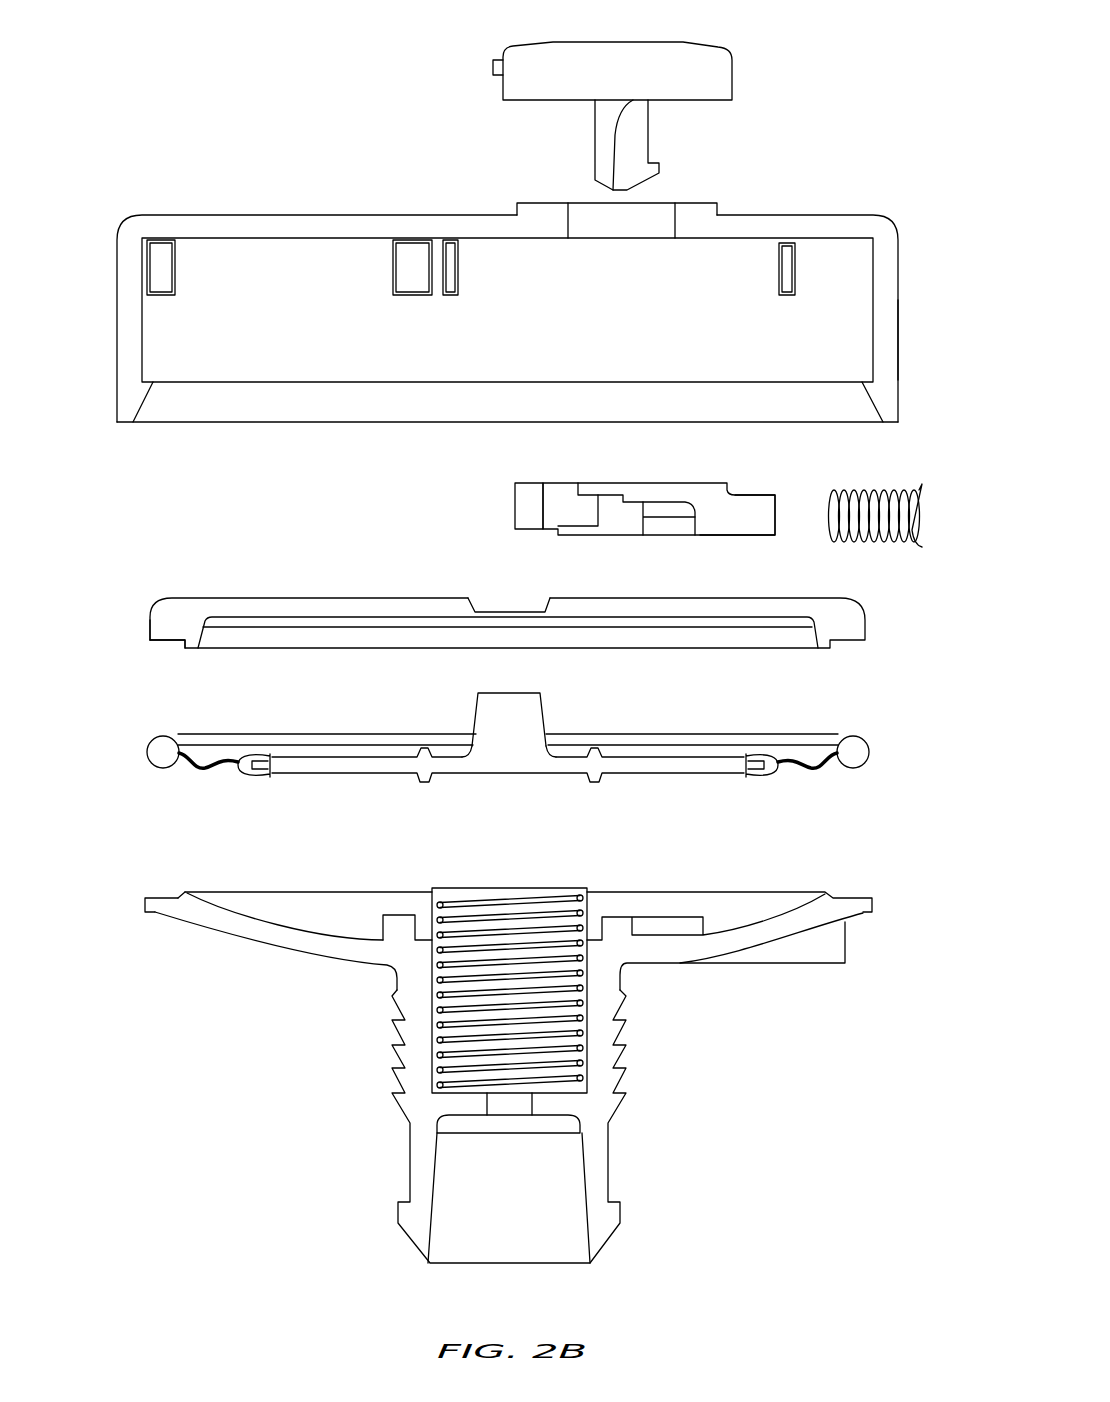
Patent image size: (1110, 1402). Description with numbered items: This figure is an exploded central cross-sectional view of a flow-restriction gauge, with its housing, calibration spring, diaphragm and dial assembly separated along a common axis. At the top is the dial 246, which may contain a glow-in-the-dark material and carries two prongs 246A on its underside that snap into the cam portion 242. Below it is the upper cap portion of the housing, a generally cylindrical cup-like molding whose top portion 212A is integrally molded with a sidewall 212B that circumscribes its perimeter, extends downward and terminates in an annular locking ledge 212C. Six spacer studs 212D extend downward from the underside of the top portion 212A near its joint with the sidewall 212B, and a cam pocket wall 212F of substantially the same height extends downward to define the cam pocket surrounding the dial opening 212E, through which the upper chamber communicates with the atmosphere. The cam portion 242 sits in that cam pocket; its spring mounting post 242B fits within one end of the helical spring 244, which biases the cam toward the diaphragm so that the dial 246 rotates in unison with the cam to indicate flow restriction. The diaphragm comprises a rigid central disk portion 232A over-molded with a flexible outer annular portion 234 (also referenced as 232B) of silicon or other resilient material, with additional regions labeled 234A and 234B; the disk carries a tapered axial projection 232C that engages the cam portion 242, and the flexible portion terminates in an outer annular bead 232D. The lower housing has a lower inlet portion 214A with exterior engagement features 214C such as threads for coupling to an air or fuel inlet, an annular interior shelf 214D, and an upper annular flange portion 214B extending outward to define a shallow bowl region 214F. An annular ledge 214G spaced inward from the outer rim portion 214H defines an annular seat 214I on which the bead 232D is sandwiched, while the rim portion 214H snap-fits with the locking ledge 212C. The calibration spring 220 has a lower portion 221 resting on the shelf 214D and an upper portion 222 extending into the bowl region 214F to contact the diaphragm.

The dial 246 is at (600, 42).
The prongs 246A is at (595, 140).
The top portion 212A is at (180, 213).
The sidewall 212B is at (900, 333).
The annular locking ledge 212C is at (140, 398).
The spacer studs 212D is at (405, 264).
The dial opening 212E is at (786, 248).
The cam pocket wall 212F is at (655, 220).
The cam portion 242 is at (514, 502).
The spring mounting post 242B is at (730, 522).
The helical spring 244 is at (863, 492).
The flexible outer annular portion 234 is at (855, 607).
The cover plate end 234A is at (165, 646).
The cover plate notch 234B is at (505, 607).
The central disk portion 232A is at (368, 763).
The flexible outer annular portion 232B is at (812, 774).
The tapered axial projection 232C is at (512, 712).
The outer annular bead 232D is at (163, 748).
The lower inlet portion 214A is at (410, 1157).
The upper annular flange portion 214B is at (230, 932).
The exterior engagement features 214C is at (400, 920).
The annular interior shelf 214D is at (593, 1122).
The shallow bowl region 214F is at (730, 922).
The annular ledge 214G is at (187, 892).
The outer rim portion 214H is at (145, 903).
The annular seat 214I is at (162, 894).
The calibration spring 220 is at (560, 1040).
The lower portion 221 is at (437, 1090).
The upper portion 222 is at (548, 898).